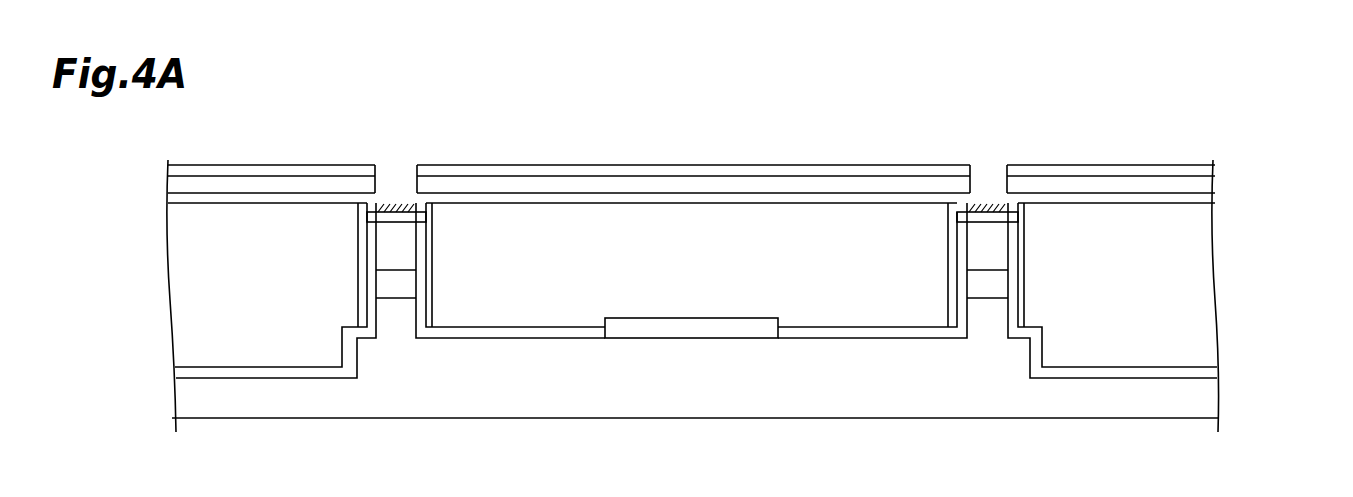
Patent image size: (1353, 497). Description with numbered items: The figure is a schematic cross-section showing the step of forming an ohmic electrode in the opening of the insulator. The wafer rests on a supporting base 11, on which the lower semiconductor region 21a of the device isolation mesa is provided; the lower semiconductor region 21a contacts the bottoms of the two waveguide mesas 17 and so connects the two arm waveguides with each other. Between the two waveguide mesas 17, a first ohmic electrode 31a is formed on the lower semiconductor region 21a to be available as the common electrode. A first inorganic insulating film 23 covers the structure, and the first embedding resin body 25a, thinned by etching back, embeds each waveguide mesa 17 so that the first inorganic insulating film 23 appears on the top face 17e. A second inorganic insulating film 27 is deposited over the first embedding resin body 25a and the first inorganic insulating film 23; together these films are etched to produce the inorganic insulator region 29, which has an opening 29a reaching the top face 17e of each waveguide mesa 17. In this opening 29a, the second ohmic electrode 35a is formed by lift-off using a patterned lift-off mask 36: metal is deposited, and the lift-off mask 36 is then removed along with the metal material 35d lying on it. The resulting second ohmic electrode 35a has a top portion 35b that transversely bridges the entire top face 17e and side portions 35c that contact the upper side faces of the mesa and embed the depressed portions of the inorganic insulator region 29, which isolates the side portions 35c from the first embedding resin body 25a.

The supporting base 11 is at (1215, 405).
The waveguide mesa 17 is at (405, 225).
The top face of the waveguide mesa 17e is at (410, 212).
The lower semiconductor region 21a is at (688, 352).
The first inorganic insulating film 23 is at (178, 368).
The first embedding resin body 25a is at (240, 254).
The second inorganic insulating film 27 is at (1213, 200).
The inorganic insulator region 29 is at (1278, 200).
The opening 29a is at (989, 183).
The first ohmic electrode 31a is at (752, 330).
The second ohmic electrode 35a is at (380, 212).
The top portion 35b is at (388, 212).
The side portions 35c is at (367, 213).
The metal material 35d is at (330, 166).
The lift-off mask 36 is at (209, 165).